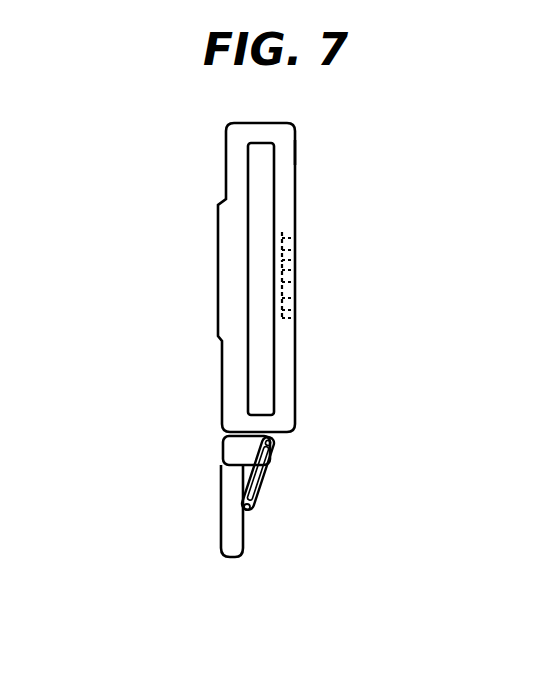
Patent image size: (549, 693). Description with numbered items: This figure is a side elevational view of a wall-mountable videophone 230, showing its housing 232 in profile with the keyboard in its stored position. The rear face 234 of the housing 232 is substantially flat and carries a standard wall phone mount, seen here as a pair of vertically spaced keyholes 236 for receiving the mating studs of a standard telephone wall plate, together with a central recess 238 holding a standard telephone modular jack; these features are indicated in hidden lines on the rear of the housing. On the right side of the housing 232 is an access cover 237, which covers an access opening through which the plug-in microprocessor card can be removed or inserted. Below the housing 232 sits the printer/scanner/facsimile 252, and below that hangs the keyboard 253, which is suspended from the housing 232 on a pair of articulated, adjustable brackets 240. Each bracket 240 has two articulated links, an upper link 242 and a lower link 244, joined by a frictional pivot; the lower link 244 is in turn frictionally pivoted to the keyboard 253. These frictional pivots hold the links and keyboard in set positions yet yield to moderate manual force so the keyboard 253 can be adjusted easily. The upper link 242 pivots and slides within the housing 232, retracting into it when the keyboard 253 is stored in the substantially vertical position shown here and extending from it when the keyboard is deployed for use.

The videophone 230 is at (130, 141).
The videophone housing 232 is at (284, 138).
The rear face 234 is at (297, 152).
The keyholes 236 is at (302, 240).
The access cover 237 is at (257, 392).
The central recess 238 is at (302, 272).
The articulated adjustable bracket 240 is at (342, 502).
The upper link 242 is at (276, 440).
The lower link 244 is at (250, 511).
The printer/scanner/facsimile 252 is at (222, 447).
The keyboard 253 is at (230, 548).